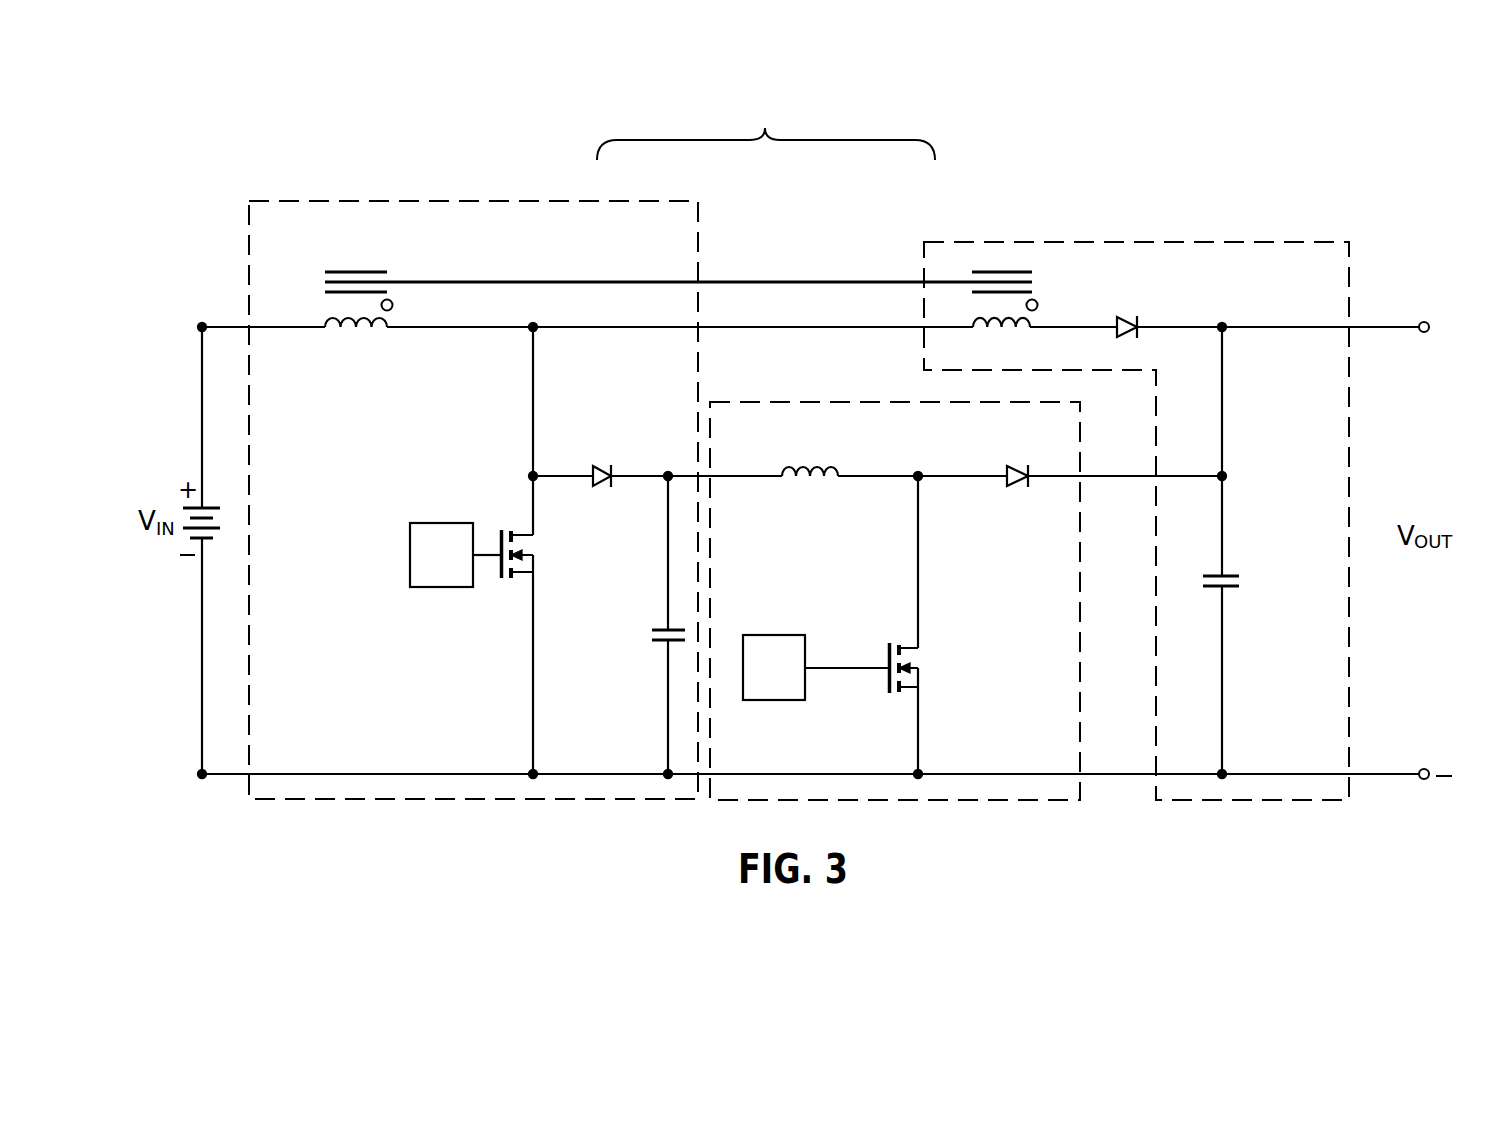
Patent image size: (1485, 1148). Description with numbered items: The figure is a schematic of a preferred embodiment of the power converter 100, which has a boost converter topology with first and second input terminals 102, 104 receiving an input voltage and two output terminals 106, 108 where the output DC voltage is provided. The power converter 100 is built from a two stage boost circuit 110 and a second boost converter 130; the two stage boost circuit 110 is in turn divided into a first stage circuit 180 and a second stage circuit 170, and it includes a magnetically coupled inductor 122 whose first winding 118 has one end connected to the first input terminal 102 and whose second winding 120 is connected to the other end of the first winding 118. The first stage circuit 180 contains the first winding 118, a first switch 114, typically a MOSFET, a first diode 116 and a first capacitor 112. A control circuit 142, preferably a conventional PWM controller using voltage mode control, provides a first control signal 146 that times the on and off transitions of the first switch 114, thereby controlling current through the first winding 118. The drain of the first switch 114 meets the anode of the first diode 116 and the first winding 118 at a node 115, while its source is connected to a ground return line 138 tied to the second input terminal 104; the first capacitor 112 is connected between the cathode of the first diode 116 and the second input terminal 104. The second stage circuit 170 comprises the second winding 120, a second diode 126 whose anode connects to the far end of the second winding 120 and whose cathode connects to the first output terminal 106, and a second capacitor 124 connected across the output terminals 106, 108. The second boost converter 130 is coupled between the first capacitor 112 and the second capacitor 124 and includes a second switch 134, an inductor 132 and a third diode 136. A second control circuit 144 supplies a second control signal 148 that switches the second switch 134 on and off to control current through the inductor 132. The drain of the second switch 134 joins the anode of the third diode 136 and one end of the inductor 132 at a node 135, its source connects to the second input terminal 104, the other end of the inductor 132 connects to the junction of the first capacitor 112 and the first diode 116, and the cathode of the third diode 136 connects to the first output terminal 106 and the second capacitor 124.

The power converter 100 is at (207, 155).
The first input terminal 102 is at (199, 327).
The second input terminal 104 is at (200, 774).
The first output terminal 106 is at (1422, 320).
The second output terminal 108 is at (1424, 766).
The two stage boost circuit 110 is at (766, 127).
The first capacitor 112 is at (660, 628).
The first switch 114 is at (535, 565).
The node 115 is at (531, 325).
The first diode 116 is at (600, 465).
The first winding 118 is at (350, 330).
The second winding 120 is at (1038, 318).
The magnetically coupled inductor 122 is at (432, 278).
The second capacitor 124 is at (1232, 573).
The second diode 126 is at (1143, 318).
The second boost converter 130 is at (983, 803).
The inductor 132 is at (810, 480).
The second switch 134 is at (922, 682).
The node 135 is at (917, 470).
The third diode 136 is at (1012, 465).
The ground return line 138 is at (530, 770).
The control circuit 142 is at (430, 522).
The second control circuit 144 is at (763, 635).
The first control signal 146 is at (485, 550).
The second control signal 148 is at (852, 665).
The second stage circuit 170 is at (977, 240).
The first stage circuit 180 is at (558, 200).